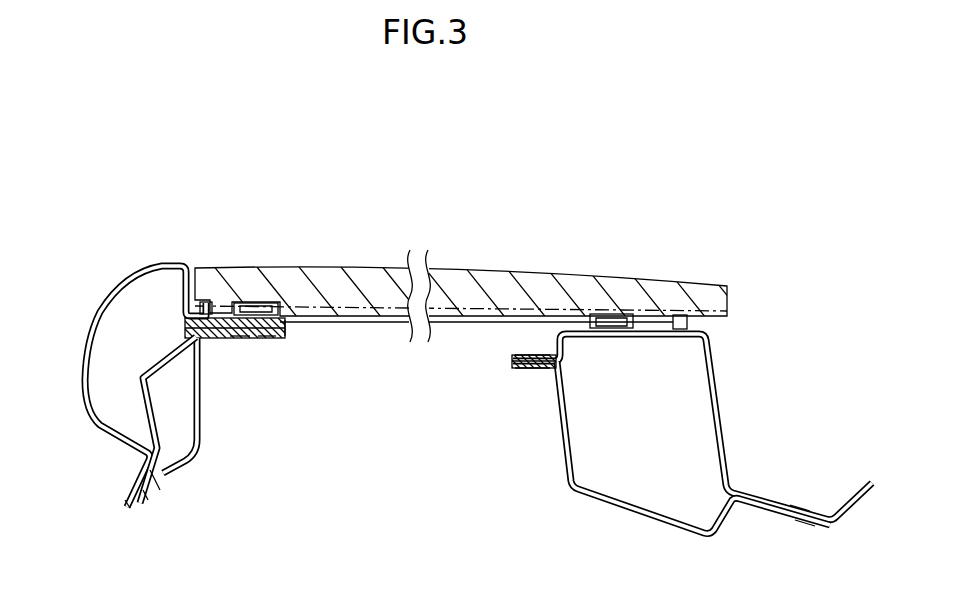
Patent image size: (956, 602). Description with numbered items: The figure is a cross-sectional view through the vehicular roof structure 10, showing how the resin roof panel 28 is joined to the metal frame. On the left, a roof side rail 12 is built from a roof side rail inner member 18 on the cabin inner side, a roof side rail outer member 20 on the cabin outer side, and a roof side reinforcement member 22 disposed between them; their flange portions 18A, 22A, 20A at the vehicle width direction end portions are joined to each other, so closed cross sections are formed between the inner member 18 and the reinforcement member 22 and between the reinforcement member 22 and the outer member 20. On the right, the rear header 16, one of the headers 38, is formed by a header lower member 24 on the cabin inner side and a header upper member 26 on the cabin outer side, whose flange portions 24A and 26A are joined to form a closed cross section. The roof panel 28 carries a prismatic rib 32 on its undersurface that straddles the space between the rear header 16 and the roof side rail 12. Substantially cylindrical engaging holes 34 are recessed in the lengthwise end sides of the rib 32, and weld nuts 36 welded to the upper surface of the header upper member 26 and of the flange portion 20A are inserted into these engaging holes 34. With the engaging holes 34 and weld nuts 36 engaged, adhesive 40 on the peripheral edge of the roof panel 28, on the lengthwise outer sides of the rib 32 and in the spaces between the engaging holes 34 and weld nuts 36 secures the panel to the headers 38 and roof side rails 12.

The vehicular roof structure 10 is at (709, 204).
The roof side rail 12 is at (165, 355).
The rear header 16 is at (682, 434).
The header 38 is at (682, 434).
The roof side rail inner member 18 is at (201, 422).
The flange portion 18A is at (240, 338).
The roof side rail outer member 20 is at (91, 321).
The flange portion 20A is at (287, 325).
The roof side reinforcement member 22 is at (138, 397).
The flange portion 22A is at (267, 338).
The header lower member 24 is at (560, 447).
The flange portion 24A is at (530, 367).
The header upper member 26 is at (722, 412).
The flange portion 26A is at (527, 354).
The roof panel 28 is at (469, 263).
The rib 32 is at (453, 318).
The engaging hole 34 is at (257, 303).
The weld nut 36 is at (248, 302).
The adhesive 40 is at (200, 310).